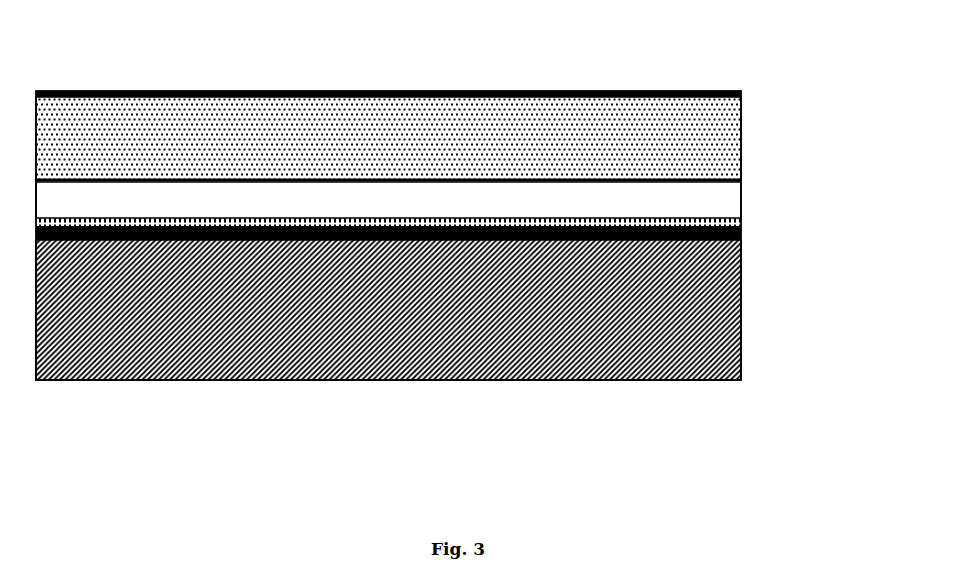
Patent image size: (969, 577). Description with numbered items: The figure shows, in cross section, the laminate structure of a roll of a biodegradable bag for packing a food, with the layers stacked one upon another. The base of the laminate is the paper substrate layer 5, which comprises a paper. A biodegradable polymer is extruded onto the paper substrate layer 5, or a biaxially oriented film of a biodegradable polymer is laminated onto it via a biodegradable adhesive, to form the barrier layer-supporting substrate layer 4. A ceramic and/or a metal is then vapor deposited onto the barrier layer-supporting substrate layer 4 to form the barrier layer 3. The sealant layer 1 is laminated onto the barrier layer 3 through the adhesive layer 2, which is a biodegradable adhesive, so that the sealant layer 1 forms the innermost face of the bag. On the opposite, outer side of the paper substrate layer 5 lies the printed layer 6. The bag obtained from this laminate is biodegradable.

The sealant layer 1 is at (733, 325).
The adhesive layer 2 is at (733, 232).
The barrier layer 3 is at (733, 220).
The barrier layer-supporting substrate layer 4 is at (735, 192).
The paper substrate layer 5 is at (733, 137).
The printed layer 6 is at (733, 87).